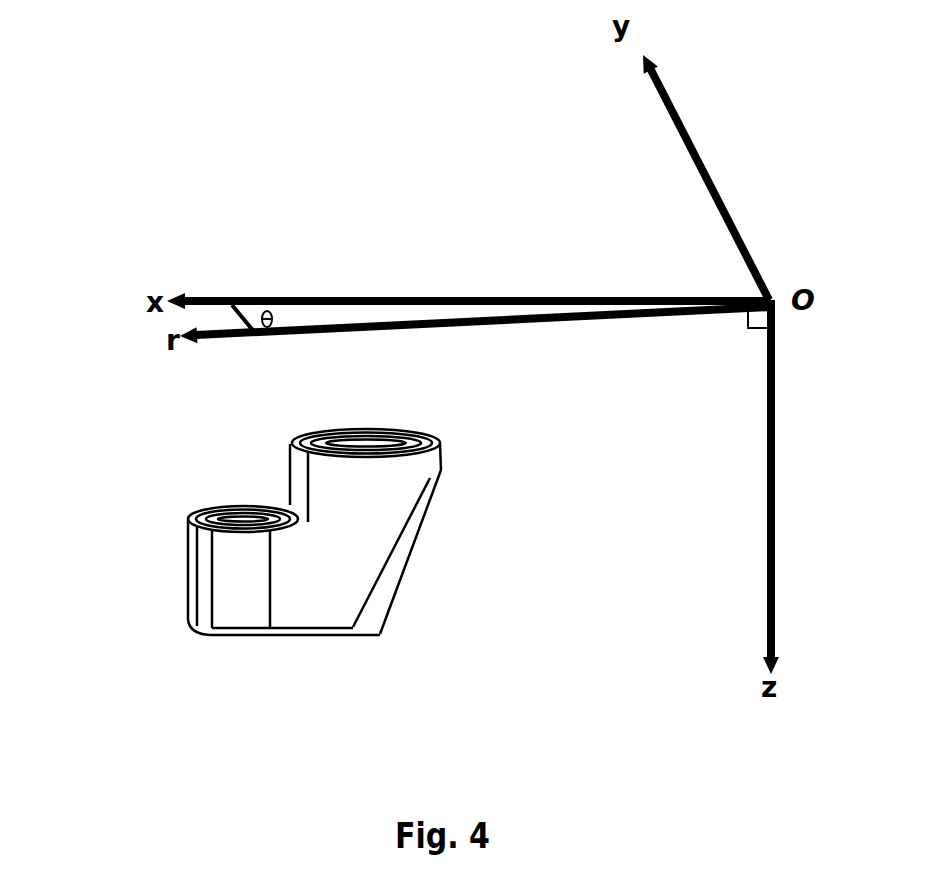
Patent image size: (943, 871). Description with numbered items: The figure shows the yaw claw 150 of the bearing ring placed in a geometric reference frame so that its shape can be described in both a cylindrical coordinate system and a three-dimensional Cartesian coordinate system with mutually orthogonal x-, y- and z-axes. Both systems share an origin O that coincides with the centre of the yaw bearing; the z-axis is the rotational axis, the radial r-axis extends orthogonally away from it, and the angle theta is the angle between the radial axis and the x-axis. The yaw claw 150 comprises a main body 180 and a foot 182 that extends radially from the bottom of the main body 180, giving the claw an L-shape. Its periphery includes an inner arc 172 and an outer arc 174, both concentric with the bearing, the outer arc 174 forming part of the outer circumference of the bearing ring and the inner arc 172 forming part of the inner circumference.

The yaw claw 150 is at (240, 458).
The inner arc 172 is at (455, 446).
The outer arc 174 is at (160, 572).
The main body 180 is at (365, 498).
The foot 182 is at (235, 615).